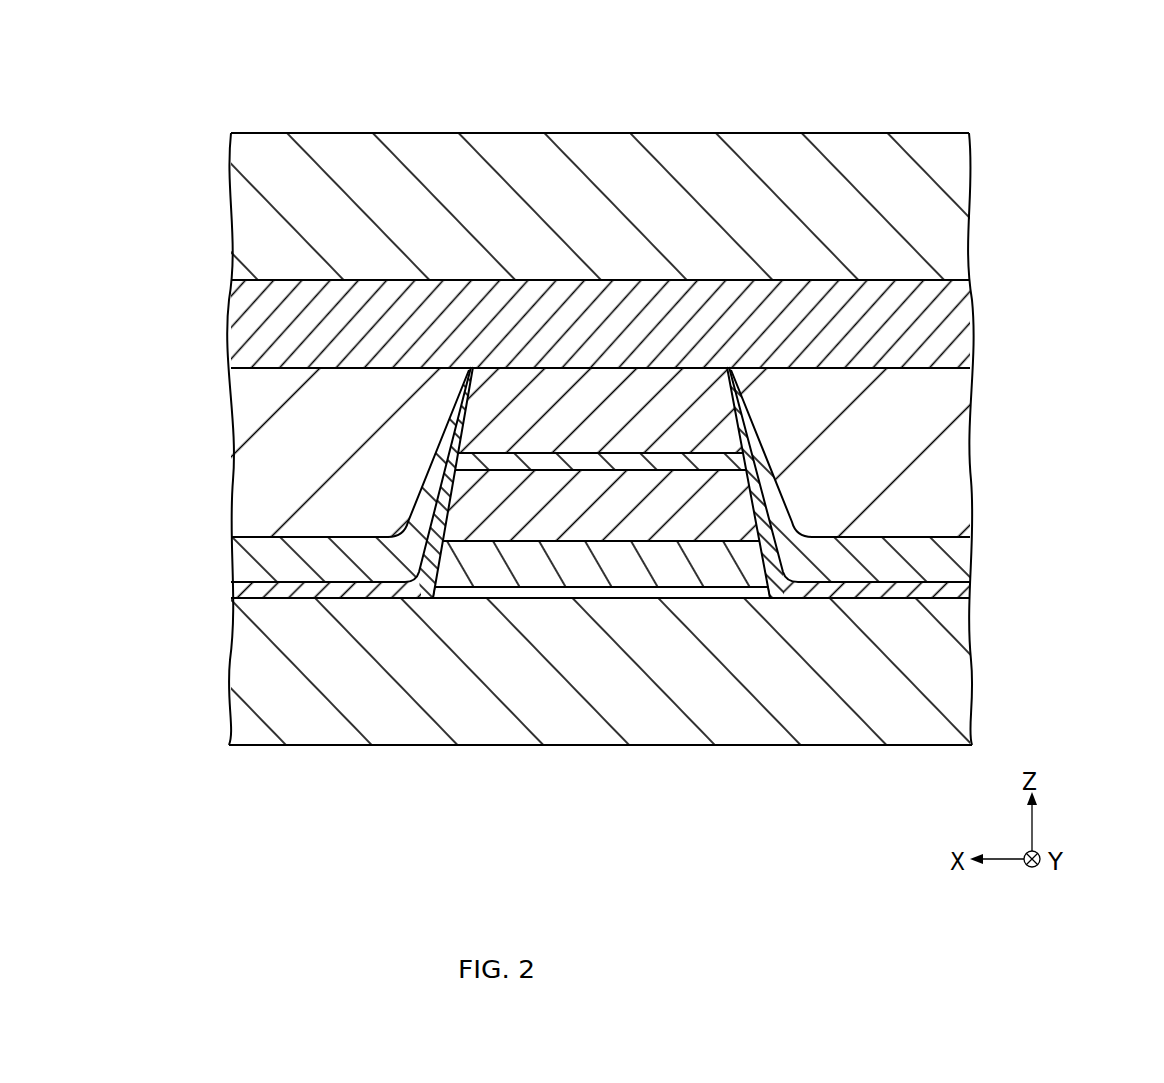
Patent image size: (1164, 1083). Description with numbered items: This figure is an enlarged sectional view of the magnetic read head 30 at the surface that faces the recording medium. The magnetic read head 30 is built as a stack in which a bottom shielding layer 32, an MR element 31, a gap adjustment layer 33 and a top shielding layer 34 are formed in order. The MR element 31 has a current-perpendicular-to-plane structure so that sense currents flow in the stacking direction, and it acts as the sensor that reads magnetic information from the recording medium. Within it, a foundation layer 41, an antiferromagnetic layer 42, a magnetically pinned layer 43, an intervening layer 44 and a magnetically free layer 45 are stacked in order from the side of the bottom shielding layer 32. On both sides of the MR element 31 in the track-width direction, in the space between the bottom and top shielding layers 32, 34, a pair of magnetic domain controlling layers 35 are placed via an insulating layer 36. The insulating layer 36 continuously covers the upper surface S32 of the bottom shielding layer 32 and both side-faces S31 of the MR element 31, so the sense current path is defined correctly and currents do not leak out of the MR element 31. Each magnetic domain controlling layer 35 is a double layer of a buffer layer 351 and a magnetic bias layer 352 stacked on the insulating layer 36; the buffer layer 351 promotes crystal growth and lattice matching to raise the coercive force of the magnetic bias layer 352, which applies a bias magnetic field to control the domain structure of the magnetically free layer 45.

The magnetic read head 30 is at (1060, 114).
The MR element 31 is at (735, 799).
The bottom shielding layer 32 is at (964, 665).
The gap adjustment layer 33 is at (964, 337).
The top shielding layer 34 is at (964, 187).
The magnetic domain controlling layers 35 is at (158, 478).
The buffer layer 351 is at (245, 552).
The magnetic bias layer 352 is at (245, 488).
The insulating layer 36 is at (236, 594).
The foundation layer 41 is at (481, 600).
The antiferromagnetic layer 42 is at (538, 570).
The magnetically pinned layer 43 is at (594, 505).
The intervening layer 44 is at (650, 470).
The magnetically free layer 45 is at (707, 403).
The side-faces of the MR element S31 is at (447, 504).
The upper surface of the bottom shielding layer S32 is at (294, 596).